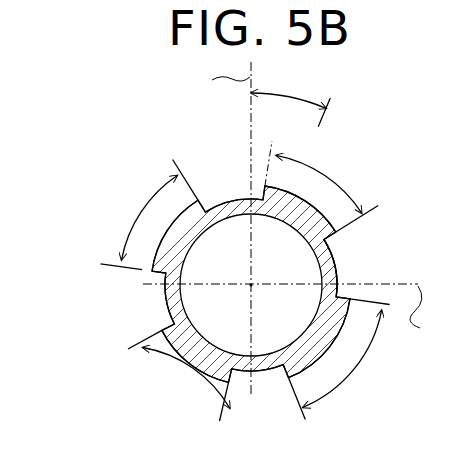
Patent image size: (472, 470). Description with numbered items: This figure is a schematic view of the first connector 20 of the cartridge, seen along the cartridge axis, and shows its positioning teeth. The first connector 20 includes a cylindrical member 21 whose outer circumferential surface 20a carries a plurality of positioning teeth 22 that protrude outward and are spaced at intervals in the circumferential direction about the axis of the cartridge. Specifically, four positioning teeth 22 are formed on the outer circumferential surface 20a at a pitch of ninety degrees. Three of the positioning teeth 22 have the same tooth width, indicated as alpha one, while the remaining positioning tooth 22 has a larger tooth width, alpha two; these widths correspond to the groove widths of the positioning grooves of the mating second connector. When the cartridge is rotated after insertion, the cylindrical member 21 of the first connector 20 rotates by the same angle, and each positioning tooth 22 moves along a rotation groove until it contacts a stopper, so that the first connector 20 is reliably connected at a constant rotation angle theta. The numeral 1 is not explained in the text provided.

The rotary tool / device 1 is at (392, 129).
The first connector 20 is at (154, 110).
The outer circumferential surface 20a is at (212, 208).
The cylindrical member 21 is at (334, 252).
The positioning teeth 22 is at (262, 193).